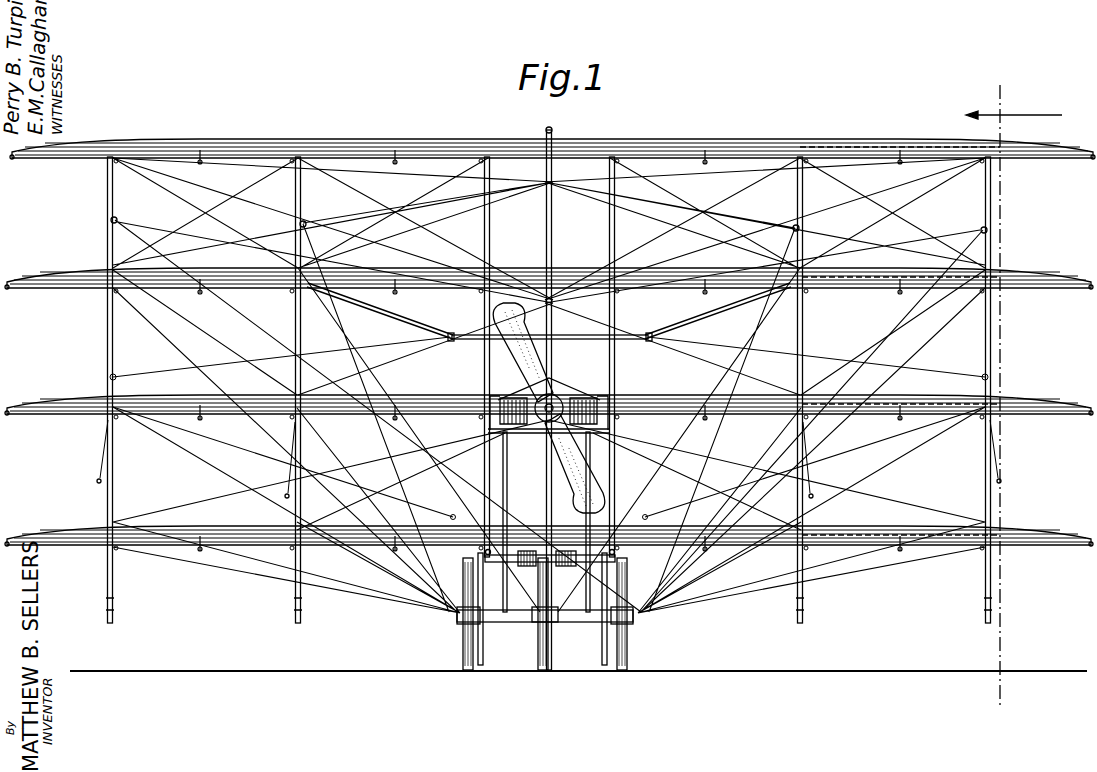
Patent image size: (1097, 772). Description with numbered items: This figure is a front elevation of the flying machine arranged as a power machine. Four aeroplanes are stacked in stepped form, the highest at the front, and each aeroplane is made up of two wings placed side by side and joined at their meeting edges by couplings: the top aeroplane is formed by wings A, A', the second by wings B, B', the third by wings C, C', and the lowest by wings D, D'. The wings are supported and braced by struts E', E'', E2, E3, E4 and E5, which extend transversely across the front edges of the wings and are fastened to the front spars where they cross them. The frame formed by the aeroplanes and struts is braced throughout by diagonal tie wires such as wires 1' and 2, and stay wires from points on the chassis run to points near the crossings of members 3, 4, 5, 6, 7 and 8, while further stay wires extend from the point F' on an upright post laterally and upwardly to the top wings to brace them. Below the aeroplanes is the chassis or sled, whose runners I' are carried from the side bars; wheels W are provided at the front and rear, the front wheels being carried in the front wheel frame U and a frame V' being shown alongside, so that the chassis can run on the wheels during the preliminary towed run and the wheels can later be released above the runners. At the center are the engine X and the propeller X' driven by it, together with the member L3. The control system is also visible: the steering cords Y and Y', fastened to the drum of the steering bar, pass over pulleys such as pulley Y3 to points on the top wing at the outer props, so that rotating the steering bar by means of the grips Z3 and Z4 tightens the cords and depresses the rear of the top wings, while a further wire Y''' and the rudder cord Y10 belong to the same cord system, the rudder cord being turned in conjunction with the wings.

The aeroplane wing A is at (552, 136).
The aeroplane wing A' is at (900, 130).
The aeroplane wing B is at (549, 267).
The aeroplane wing B' is at (901, 261).
The aeroplane wing C is at (549, 394).
The aeroplane wing C' is at (901, 390).
The aeroplane wing D is at (549, 525).
The aeroplane wing D' is at (901, 519).
The strut E' is at (91, 390).
The inner left vertical strut E'' is at (281, 390).
The strut E2 is at (483, 302).
The strut E3 is at (614, 302).
The strut E4 is at (803, 327).
The strut E5 is at (997, 320).
The stay wire point on post F' is at (549, 229).
The engine X is at (559, 463).
The propeller X' is at (549, 368).
The steering cord Y is at (549, 362).
The steering cord Y' is at (549, 416).
The pulley Y3 is at (982, 228).
The rudder cord Y10 is at (846, 446).
The guy wire Y''' is at (283, 462).
The transverse shaft L3 is at (585, 340).
The grip Z3 is at (528, 564).
The grip Z4 is at (574, 564).
The front wheel frame U is at (650, 617).
The central bearing block V' is at (531, 627).
The wheel W is at (628, 663).
The runner I' is at (542, 609).
The attachment point 1' is at (160, 197).
The diagonal tie wire 2 is at (157, 232).
The frame member 3 is at (978, 531).
The frame member 4 is at (978, 400).
The frame member 5 is at (978, 274).
The frame member 6 is at (785, 535).
The frame member 7 is at (790, 406).
The frame member 8 is at (795, 284).